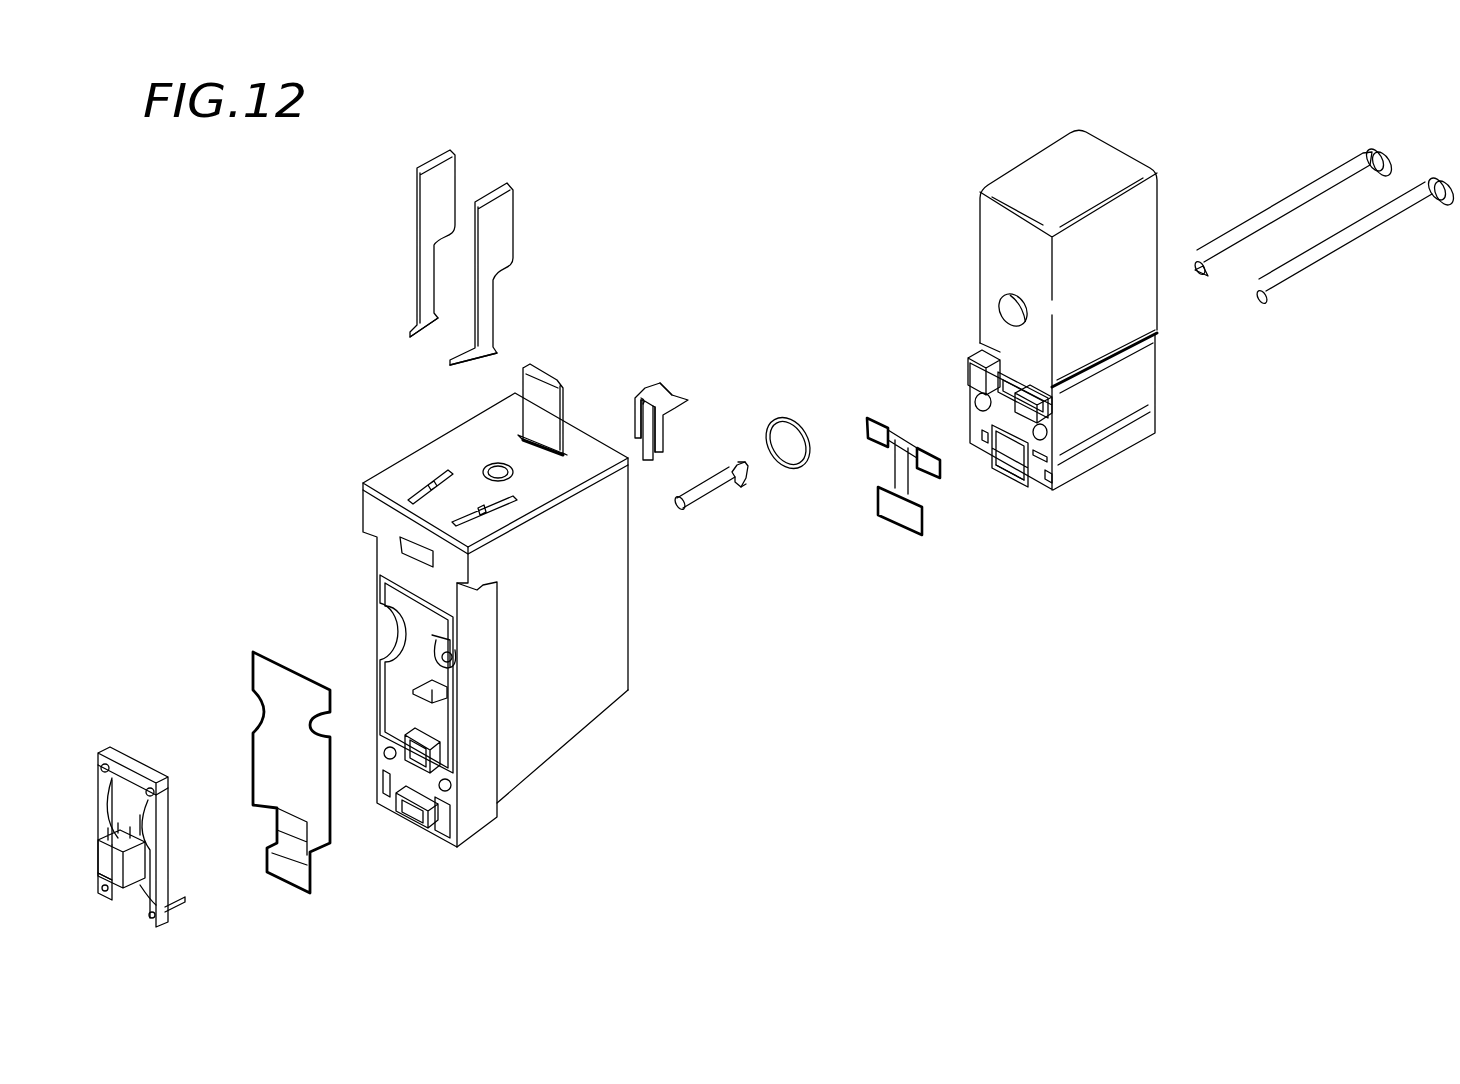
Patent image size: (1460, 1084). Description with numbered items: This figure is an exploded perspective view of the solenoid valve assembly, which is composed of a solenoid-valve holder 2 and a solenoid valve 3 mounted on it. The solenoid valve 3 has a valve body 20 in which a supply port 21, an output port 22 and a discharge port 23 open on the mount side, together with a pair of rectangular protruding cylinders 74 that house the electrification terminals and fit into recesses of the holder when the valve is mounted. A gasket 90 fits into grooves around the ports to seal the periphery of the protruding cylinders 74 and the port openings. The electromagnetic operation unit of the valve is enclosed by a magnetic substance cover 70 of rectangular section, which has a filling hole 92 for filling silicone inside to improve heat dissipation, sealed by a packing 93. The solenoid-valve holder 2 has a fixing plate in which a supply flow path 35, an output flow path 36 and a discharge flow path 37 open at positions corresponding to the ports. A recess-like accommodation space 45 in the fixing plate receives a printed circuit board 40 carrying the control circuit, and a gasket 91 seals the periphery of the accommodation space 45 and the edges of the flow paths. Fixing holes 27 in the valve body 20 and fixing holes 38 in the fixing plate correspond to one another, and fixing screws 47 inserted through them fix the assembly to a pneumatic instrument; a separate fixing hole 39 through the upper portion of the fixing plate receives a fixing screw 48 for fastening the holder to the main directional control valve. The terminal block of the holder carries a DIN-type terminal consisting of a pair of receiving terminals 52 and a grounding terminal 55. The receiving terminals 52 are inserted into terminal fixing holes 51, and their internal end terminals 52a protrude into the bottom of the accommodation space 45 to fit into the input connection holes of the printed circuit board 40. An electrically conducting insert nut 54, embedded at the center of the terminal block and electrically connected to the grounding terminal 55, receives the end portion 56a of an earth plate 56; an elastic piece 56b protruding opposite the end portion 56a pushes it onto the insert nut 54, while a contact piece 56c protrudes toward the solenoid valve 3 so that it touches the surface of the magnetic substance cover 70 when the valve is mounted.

The solenoid-valve holder 2 is at (347, 470).
The solenoid valve 3 is at (965, 180).
The valve body 20 is at (1145, 377).
The supply port 21 is at (1015, 480).
The output port 22 is at (1003, 468).
The discharge port 23 is at (992, 397).
The fixing holes 27 is at (976, 400).
The supply flow path 35 is at (418, 822).
The output flow path 36 is at (405, 812).
The discharge flow path 37 is at (405, 760).
The fixing holes 38 is at (450, 790).
The fixing hole 39 is at (452, 661).
The printed circuit board 40 is at (140, 752).
The accommodation space 45 is at (415, 615).
The fixing screws 47 is at (1327, 265).
The fixing screw 48 is at (713, 506).
The terminal fixing holes 51 is at (452, 490).
The receiving terminals 52 is at (428, 205).
The internal end terminals 52a is at (413, 338).
The insert nut 54 is at (485, 508).
The grounding terminal 55 is at (541, 382).
The earth plate 56 is at (653, 384).
The end portion 56a is at (680, 386).
The elastic piece 56b is at (644, 456).
The contact piece 56c is at (665, 438).
The magnetic substance cover 70 is at (1130, 160).
The rectangular protruding cylinders 74 is at (975, 358).
The gasket 90 is at (897, 532).
The gasket 91 is at (278, 652).
The filling hole 92 is at (1000, 303).
The packing 93 is at (800, 469).